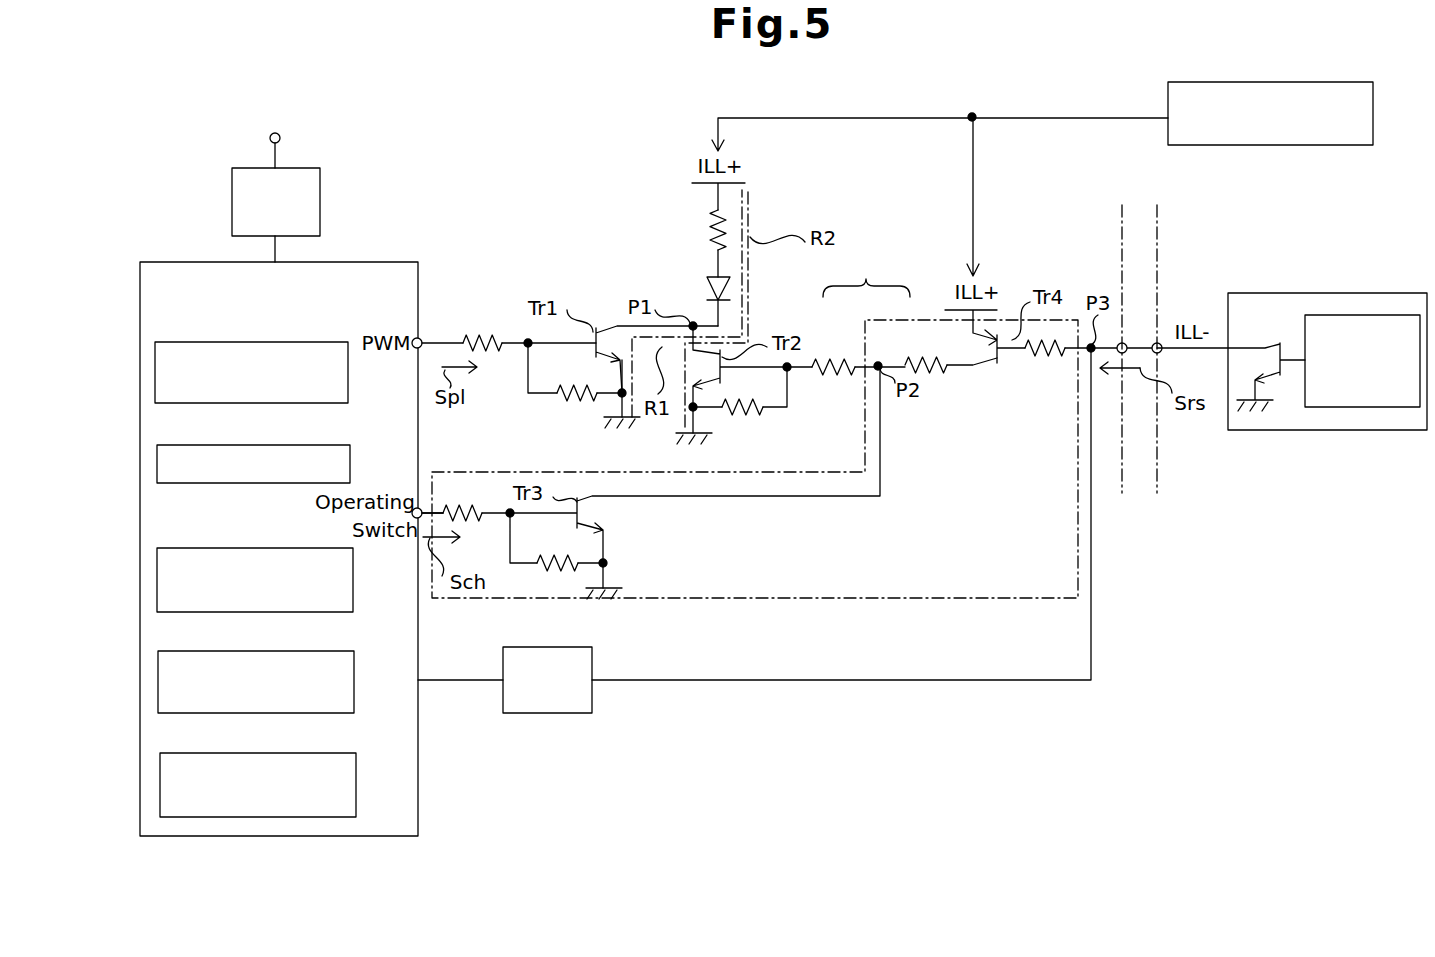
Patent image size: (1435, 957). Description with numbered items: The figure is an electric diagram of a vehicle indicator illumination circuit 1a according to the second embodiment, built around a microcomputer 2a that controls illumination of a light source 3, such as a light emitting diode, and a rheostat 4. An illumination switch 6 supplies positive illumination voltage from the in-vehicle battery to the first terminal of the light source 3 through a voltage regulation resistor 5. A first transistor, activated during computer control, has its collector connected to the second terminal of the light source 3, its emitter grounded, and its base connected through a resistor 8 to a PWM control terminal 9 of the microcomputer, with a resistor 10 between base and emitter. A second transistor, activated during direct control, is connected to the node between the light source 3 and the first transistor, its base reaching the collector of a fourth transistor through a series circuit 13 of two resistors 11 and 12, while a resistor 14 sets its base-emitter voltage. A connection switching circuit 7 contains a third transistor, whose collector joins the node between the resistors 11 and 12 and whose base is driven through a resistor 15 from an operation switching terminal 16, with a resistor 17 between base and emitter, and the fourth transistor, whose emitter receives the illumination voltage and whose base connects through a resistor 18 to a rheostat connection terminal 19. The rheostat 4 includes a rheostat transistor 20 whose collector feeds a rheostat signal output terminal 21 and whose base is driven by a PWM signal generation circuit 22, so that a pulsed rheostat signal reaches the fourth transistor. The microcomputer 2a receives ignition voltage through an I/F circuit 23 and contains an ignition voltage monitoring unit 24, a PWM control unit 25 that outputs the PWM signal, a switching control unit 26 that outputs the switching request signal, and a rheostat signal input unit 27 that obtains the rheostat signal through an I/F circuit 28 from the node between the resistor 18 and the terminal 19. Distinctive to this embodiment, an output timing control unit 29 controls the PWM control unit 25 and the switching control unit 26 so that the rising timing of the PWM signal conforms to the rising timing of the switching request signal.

The vehicle indicator illumination circuit 1a is at (171, 131).
The microcomputer 2a is at (193, 262).
The light source 3 is at (707, 283).
The rheostat 4 is at (1242, 292).
The voltage regulation resistor 5 is at (712, 228).
The illumination switch 6 is at (1333, 82).
The connection switching circuit 7 is at (838, 600).
The resistor 8 is at (482, 352).
The PWM control terminal 9 is at (421, 339).
The resistor 10 is at (572, 400).
The resistor 11 is at (837, 357).
The resistor 12 is at (920, 360).
The series circuit 13 is at (866, 274).
The resistor 14 is at (735, 417).
The resistor 15 is at (463, 522).
The operation switching terminal 16 is at (433, 500).
The resistor 17 is at (553, 573).
The resistor 18 is at (1042, 360).
The rheostat connection terminal 19 is at (1124, 345).
The rheostat transistor 20 is at (1265, 343).
The rheostat signal output terminal 21 is at (1160, 352).
The PWM signal generation circuit 22 is at (1303, 378).
The I/F circuit 23 is at (320, 202).
The ignition voltage monitoring unit 24 is at (200, 342).
The PWM control unit 25 is at (200, 445).
The switching control unit 26 is at (200, 548).
The rheostat signal input unit 27 is at (203, 651).
The I/F circuit 28 is at (548, 717).
The output timing control unit 29 is at (205, 753).